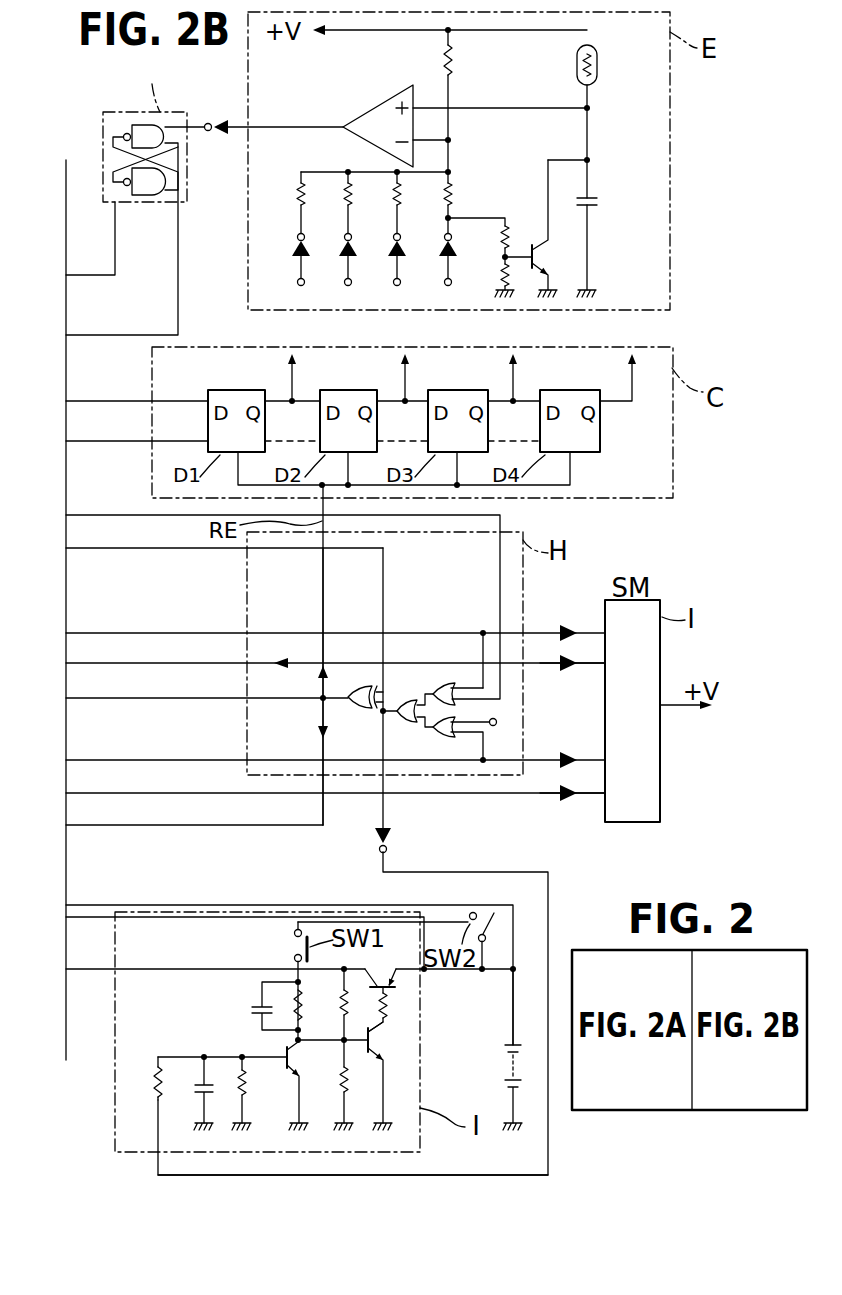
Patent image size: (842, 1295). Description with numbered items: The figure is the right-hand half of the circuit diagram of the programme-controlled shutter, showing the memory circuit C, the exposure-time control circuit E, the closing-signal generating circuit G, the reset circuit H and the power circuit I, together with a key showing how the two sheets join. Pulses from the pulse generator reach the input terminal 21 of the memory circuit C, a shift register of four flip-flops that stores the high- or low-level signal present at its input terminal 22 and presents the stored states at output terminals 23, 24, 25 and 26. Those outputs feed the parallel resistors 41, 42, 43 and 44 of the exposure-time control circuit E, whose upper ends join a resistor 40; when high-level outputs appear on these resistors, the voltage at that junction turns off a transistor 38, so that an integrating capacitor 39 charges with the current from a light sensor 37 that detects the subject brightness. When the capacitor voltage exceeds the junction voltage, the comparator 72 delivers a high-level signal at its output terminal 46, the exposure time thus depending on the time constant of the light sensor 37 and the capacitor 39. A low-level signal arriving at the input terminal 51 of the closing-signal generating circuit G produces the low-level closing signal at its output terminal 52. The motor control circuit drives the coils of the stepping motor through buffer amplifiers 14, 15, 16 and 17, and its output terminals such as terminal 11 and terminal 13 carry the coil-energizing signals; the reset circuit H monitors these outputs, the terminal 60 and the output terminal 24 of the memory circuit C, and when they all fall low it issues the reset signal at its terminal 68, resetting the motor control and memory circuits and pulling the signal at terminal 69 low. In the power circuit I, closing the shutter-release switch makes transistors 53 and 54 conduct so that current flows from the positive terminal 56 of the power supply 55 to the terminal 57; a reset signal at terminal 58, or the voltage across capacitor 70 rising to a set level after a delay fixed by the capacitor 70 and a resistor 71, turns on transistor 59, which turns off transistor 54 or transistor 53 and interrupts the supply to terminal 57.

The output terminal 11 is at (353, 662).
The output terminal 13 is at (347, 797).
The buffer amplifier 14 is at (568, 627).
The buffer amplifier 15 is at (568, 669).
The buffer amplifier 16 is at (568, 757).
The buffer amplifier 17 is at (568, 799).
The input terminal 21 is at (112, 444).
The input terminal 22 is at (133, 400).
The output terminal 23 is at (288, 362).
The output terminal 24 is at (401, 362).
The output terminal 25 is at (509, 362).
The output terminal 26 is at (628, 362).
The light sensor 37 is at (600, 63).
The transistor 38 is at (545, 250).
The integrating capacitor 39 is at (600, 201).
The resistor 40 is at (455, 63).
The parallel resistor 41 is at (455, 200).
The parallel resistor 42 is at (393, 190).
The parallel resistor 43 is at (344, 190).
The parallel resistor 44 is at (297, 190).
The output terminal 46 is at (250, 125).
The input terminal 51 is at (190, 125).
The output terminal 52 is at (120, 205).
The transistor 53 is at (378, 1062).
The transistor 54 is at (390, 979).
The power supply 55 is at (505, 1050).
The positive terminal 56 is at (443, 975).
The terminal 57 is at (182, 975).
The terminal 58 is at (157, 1162).
The transistor 59 is at (290, 1078).
The terminal 60 is at (338, 551).
The output terminal 68 is at (323, 701).
The terminal 69 is at (388, 766).
The capacitor 70 is at (190, 1090).
The resistor 71 is at (156, 1075).
The comparator 72 is at (372, 105).